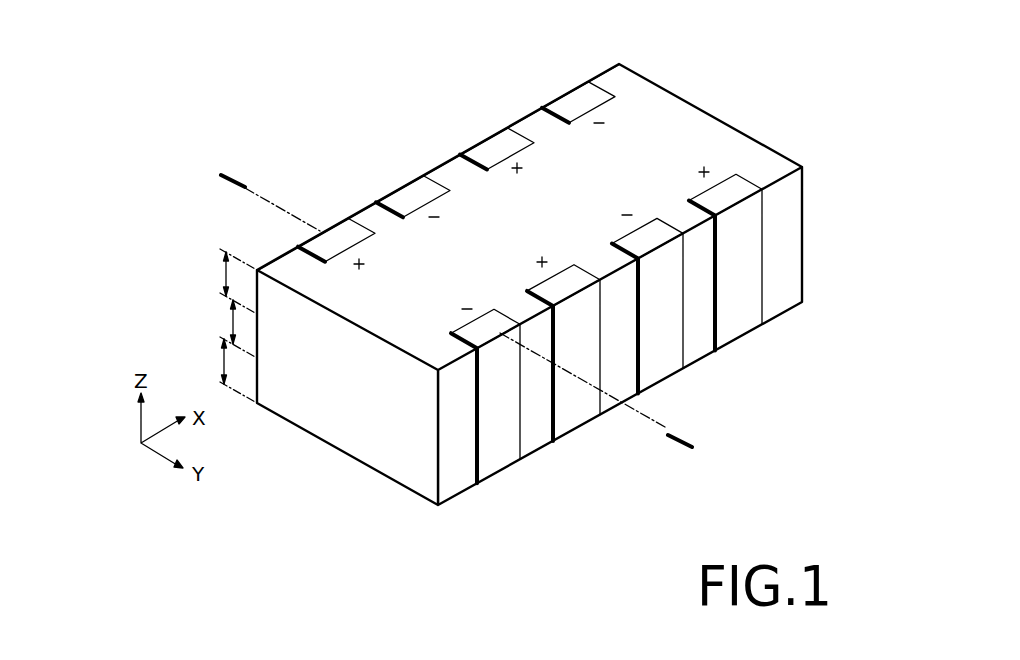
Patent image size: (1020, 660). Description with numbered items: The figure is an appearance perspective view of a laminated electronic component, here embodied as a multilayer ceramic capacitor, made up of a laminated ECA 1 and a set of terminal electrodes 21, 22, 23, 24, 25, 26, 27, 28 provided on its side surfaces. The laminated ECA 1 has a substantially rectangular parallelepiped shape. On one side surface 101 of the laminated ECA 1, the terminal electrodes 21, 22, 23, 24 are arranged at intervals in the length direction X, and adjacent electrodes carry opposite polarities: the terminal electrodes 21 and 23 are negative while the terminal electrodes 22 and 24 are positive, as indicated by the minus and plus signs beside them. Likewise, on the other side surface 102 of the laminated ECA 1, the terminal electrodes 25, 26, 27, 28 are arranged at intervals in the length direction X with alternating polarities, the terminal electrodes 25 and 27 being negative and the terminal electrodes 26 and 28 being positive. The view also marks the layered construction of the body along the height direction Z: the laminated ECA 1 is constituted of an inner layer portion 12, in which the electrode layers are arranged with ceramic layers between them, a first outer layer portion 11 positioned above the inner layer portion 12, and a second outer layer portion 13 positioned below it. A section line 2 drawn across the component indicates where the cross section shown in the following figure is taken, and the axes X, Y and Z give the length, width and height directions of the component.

The laminated ECA 1 is at (697, 122).
The side surface 101 is at (451, 467).
The side surface 102 is at (353, 213).
The first outer layer portion 11 is at (226, 275).
The inner layer portion 12 is at (233, 323).
The second outer layer portion 13 is at (224, 363).
The terminal electrode 21 is at (495, 453).
The terminal electrode 22 is at (566, 412).
The terminal electrode 23 is at (658, 360).
The terminal electrode 24 is at (732, 320).
The terminal electrode 25 is at (574, 106).
The terminal electrode 26 is at (493, 147).
The terminal electrode 27 is at (413, 197).
The terminal electrode 28 is at (322, 248).
The line 2- 2 is at (233, 180).